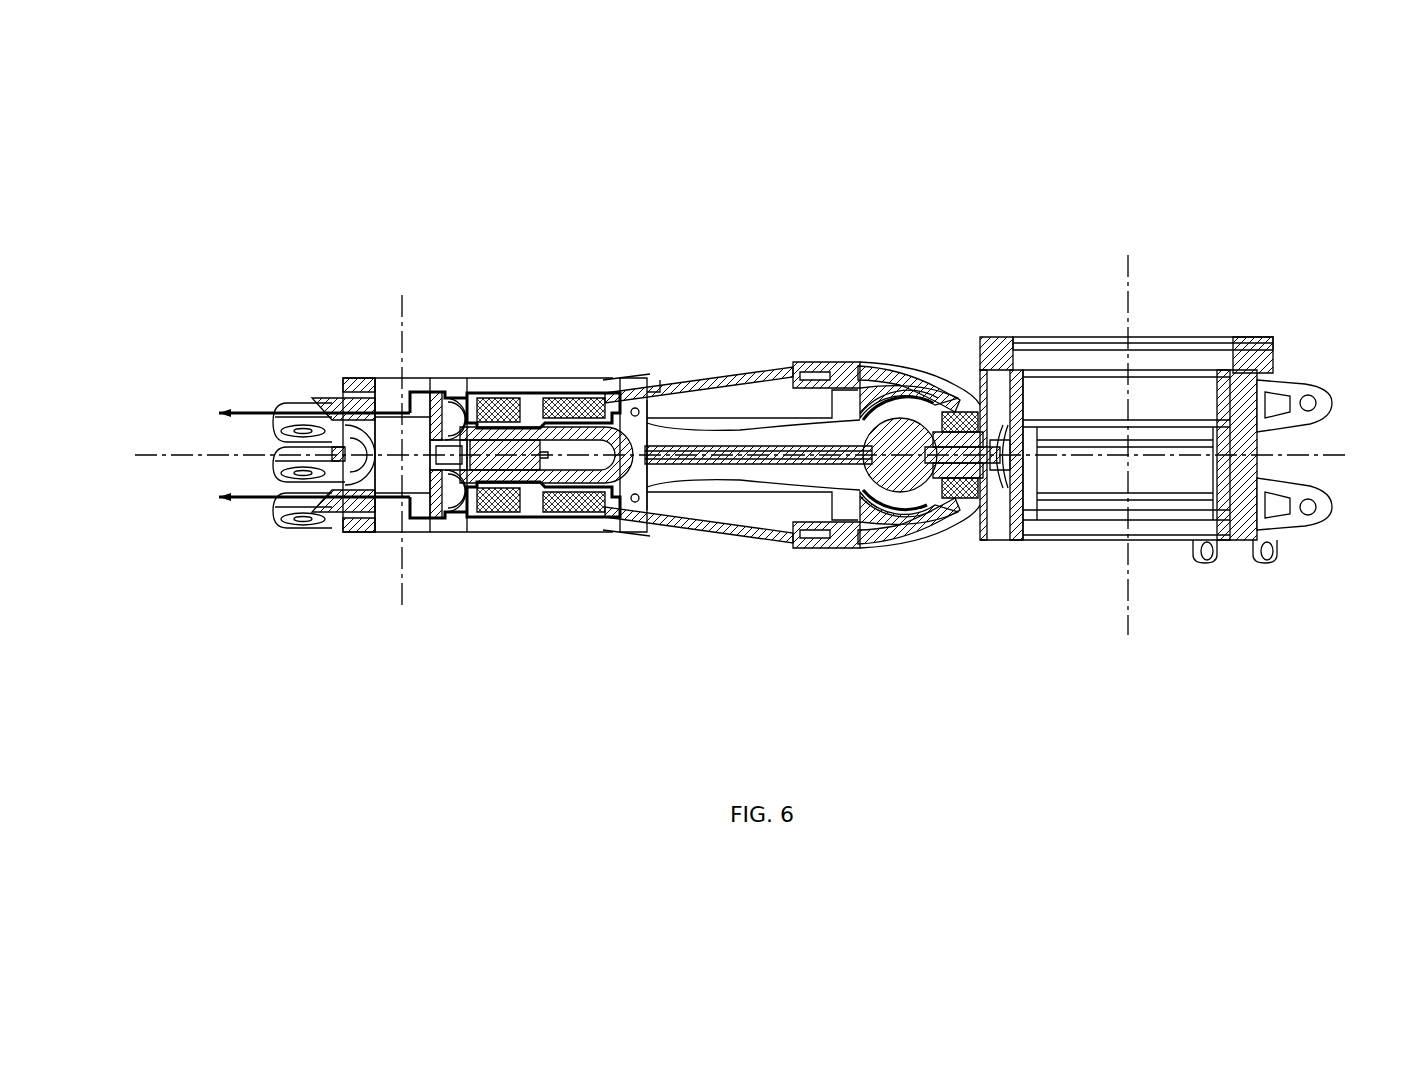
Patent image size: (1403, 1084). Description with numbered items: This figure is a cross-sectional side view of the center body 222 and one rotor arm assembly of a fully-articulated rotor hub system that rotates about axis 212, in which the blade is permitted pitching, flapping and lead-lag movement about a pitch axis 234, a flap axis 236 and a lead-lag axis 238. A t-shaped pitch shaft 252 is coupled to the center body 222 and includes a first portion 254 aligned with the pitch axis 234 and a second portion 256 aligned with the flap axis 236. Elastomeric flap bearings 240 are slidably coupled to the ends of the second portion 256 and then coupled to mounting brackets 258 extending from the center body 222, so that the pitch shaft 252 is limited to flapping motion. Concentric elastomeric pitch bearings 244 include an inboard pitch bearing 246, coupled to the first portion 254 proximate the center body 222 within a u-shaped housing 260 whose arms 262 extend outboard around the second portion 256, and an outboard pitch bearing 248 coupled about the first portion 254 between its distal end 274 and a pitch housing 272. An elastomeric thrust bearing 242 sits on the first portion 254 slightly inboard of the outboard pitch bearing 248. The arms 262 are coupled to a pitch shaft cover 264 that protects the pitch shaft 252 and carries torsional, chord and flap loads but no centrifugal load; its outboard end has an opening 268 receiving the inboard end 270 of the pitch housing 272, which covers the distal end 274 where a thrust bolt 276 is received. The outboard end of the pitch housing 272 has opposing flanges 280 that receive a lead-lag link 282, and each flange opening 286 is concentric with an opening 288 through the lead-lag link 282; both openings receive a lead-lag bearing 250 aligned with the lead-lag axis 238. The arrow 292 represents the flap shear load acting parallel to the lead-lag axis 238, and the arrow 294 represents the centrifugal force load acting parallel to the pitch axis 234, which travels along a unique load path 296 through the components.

The axis 212 is at (1128, 258).
The center body 222 is at (1235, 530).
The pitch axis 234 is at (150, 455).
The flap axis 236 is at (925, 497).
The lead-lag axis 238 is at (402, 297).
The elastomeric flap bearings 240 is at (937, 502).
The elastomeric thrust bearing 242 is at (576, 394).
The concentric elastomeric pitch bearings 244 is at (516, 405).
The inboard pitch bearing 246 is at (1032, 518).
The outboard pitch bearing 248 is at (493, 507).
The lead-lag bearing 250 is at (385, 512).
The pitch shaft 252 is at (790, 486).
The first portion 254 is at (700, 440).
The second portion 256 is at (857, 520).
The mounting brackets 258 is at (975, 386).
The u-shaped housing 260 is at (935, 364).
The arms 262 is at (890, 372).
The pitch shaft cover 264 is at (742, 385).
The opening 268 is at (583, 530).
The inboard end 270 is at (645, 385).
The pitch housing 272 is at (480, 396).
The distal end 274 is at (462, 518).
The thrust bolt 276 is at (463, 378).
The flanges 280 is at (352, 377).
The lead-lag link 282 is at (268, 526).
The opening 286 is at (388, 384).
The opening 288 is at (420, 533).
The arrow 292 is at (402, 632).
The arrow 294 is at (318, 455).
The load path 296 is at (271, 405).